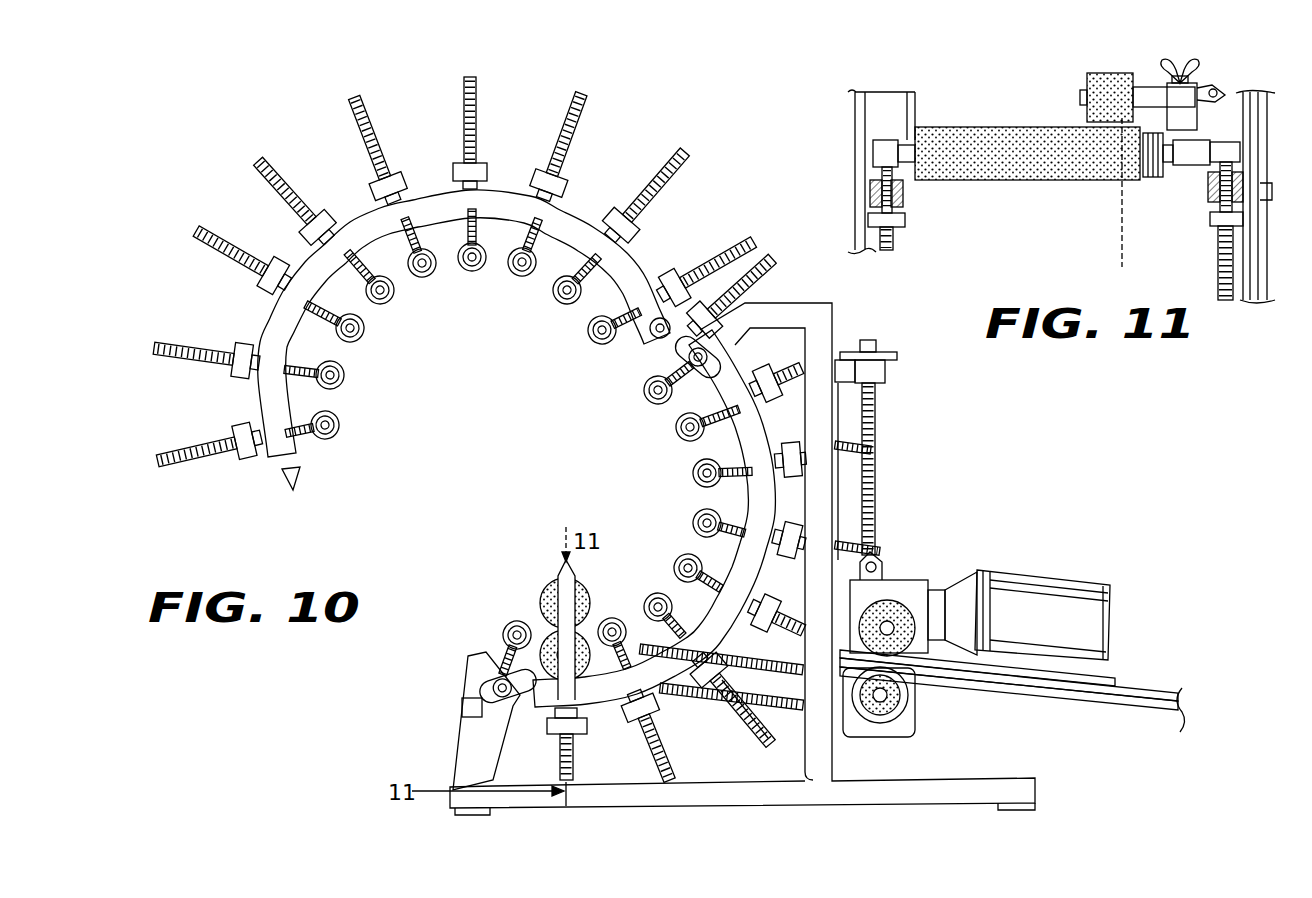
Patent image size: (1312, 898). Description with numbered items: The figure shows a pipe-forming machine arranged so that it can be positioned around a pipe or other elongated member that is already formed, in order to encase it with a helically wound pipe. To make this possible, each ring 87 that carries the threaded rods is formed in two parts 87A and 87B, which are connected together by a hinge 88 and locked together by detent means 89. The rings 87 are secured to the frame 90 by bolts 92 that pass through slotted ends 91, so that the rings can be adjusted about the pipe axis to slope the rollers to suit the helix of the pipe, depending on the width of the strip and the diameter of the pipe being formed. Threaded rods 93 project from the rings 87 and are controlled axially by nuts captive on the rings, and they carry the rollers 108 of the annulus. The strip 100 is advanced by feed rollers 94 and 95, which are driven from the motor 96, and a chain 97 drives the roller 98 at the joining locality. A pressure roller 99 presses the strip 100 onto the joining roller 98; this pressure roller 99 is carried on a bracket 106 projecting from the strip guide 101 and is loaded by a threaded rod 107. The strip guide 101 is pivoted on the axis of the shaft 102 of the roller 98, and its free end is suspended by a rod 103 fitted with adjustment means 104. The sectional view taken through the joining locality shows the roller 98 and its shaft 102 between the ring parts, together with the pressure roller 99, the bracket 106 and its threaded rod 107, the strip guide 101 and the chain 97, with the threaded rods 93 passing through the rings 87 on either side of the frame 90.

In FIG. 10, the ring 87 is at (624, 273).
In FIG. 11, the ring 87 is at (905, 190).
In FIG. 10, the ring part 87A is at (452, 197).
In FIG. 10, the ring part 87B is at (762, 497).
In FIG. 10, the hinge 88 is at (655, 336).
In FIG. 10, the detent means 89 is at (299, 477).
In FIG. 10, the frame 90 is at (788, 318).
In FIG. 11, the frame 90 is at (852, 127).
In FIG. 10, the slotted end 91 is at (672, 360).
In FIG. 10, the bolt 92 is at (669, 402).
In FIG. 10, the threaded rod 93 is at (641, 188).
In FIG. 11, the threaded rod 93 is at (896, 241).
In FIG. 10, the feed roller 94 is at (893, 603).
In FIG. 10, the feed roller 95 is at (915, 706).
In FIG. 10, the motor 96 is at (1017, 578).
In FIG. 10, the chain 97 is at (704, 704).
In FIG. 11, the chain 97 is at (1158, 180).
In FIG. 10, the roller 98 is at (553, 638).
In FIG. 11, the roller 98 is at (1008, 181).
In FIG. 10, the pressure roller 99 is at (547, 584).
In FIG. 11, the pressure roller 99 is at (1086, 82).
In FIG. 10, the strip 100 is at (1147, 688).
In FIG. 10, the strip guide 101 is at (1015, 692).
In FIG. 11, the strip guide 101 is at (1191, 155).
In FIG. 10, the shaft 102 is at (598, 622).
In FIG. 10, the rod 103 is at (878, 411).
In FIG. 10, the adjustment means 104 is at (873, 352).
In FIG. 11, the bracket 106 is at (1179, 107).
In FIG. 11, the threaded rod 107 is at (1200, 78).
In FIG. 10, the roller 108 is at (357, 338).